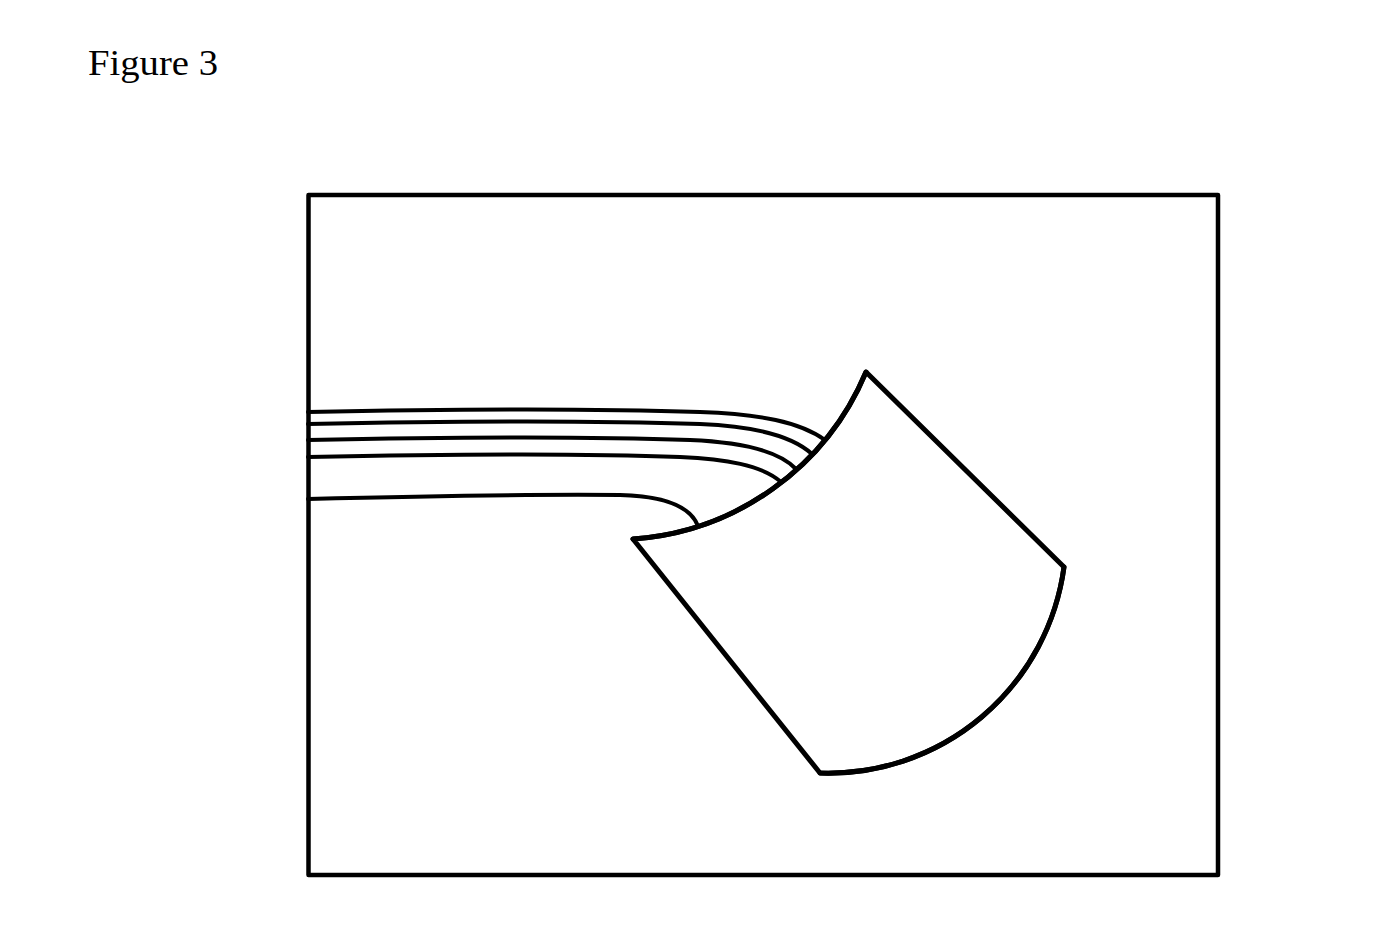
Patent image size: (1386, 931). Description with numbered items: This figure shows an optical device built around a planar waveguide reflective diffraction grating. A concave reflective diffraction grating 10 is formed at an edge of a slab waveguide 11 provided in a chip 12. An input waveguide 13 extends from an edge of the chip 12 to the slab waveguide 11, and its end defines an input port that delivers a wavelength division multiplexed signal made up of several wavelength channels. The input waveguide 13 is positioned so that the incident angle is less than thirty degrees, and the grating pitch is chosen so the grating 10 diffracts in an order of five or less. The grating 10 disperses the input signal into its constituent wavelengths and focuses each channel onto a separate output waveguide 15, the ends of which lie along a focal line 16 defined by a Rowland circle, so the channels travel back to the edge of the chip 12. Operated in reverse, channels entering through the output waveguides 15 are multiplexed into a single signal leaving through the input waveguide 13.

The concave reflective diffraction grating 10 is at (1026, 670).
The slab waveguide 11 is at (923, 472).
The chip 12 is at (503, 748).
The input waveguide 13 is at (343, 499).
The output waveguides 15 is at (708, 457).
The focal line 16 is at (850, 395).